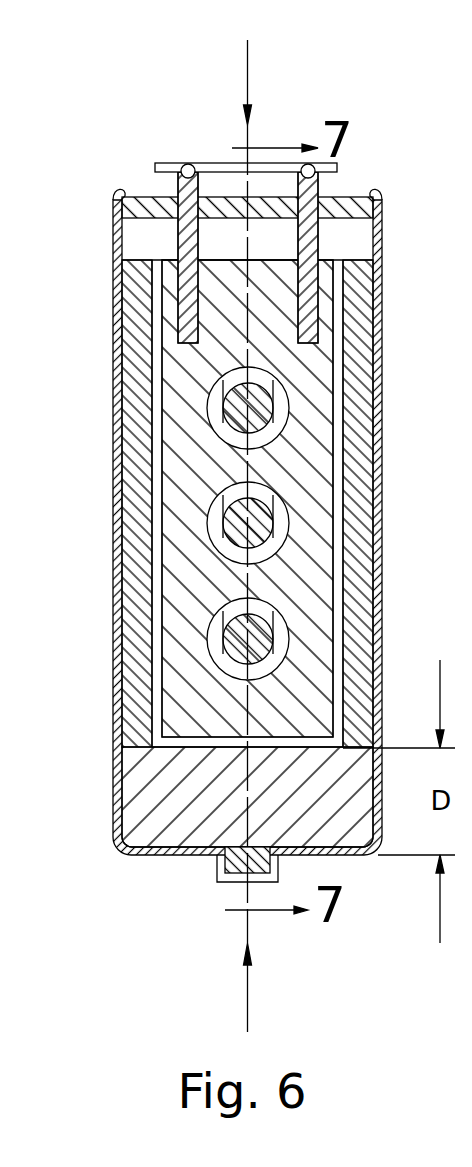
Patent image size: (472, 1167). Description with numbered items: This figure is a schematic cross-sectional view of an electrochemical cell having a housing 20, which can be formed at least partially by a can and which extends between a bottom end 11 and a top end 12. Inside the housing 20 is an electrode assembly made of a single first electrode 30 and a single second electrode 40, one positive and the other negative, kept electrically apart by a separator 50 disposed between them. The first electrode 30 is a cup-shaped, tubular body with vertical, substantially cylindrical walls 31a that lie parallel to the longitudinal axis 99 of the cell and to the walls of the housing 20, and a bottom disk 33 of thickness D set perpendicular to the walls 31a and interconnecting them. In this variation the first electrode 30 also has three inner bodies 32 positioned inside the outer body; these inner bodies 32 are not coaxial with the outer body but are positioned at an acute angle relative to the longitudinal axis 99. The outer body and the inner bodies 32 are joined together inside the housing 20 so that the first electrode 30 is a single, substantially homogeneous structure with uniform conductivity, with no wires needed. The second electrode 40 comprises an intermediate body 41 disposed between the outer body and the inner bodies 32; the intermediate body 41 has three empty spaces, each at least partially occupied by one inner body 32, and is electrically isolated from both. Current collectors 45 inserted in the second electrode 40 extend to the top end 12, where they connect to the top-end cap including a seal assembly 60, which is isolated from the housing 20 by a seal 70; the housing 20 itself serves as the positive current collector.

The bottom end 11 is at (248, 993).
The top end 12 is at (247, 64).
The housing 20 is at (386, 557).
The first electrode 30 is at (257, 428).
The cylindrical walls 31a is at (357, 598).
The inner body 32 is at (243, 434).
The bottom disk 33 is at (134, 827).
The second electrode 40 is at (265, 465).
The intermediate body 41 is at (305, 662).
The current collectors 45 is at (305, 248).
The separator 50 is at (212, 399).
The seal assembly 60 is at (210, 109).
The seal 70 is at (348, 202).
The longitudinal axis 99 is at (247, 138).